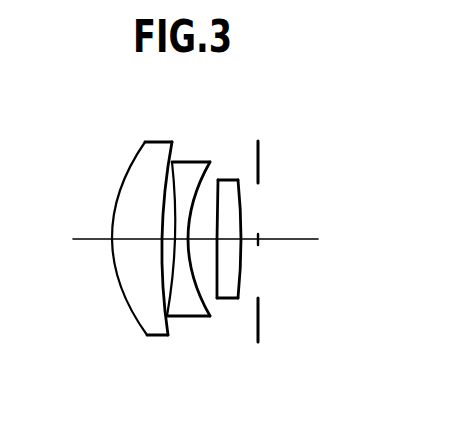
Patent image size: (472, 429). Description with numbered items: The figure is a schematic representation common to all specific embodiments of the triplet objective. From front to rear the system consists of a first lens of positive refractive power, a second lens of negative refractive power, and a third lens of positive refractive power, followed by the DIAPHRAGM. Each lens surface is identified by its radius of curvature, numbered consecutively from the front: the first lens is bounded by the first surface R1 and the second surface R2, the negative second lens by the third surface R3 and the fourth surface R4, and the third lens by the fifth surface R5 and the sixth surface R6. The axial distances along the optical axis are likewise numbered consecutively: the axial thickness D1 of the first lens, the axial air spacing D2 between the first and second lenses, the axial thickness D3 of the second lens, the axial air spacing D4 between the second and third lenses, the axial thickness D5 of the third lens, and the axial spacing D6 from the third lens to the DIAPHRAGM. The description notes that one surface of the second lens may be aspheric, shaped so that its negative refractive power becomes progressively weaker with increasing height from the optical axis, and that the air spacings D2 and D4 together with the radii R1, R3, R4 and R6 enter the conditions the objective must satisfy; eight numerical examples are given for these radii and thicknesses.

The first surface radius of curvature R1 is at (148, 141).
The second surface radius of curvature R2 is at (171, 141).
The third surface radius of curvature R3 is at (175, 161).
The fourth surface radius of curvature R4 is at (208, 161).
The fifth surface radius of curvature R5 is at (219, 179).
The sixth surface radius of curvature R6 is at (240, 179).
The axial thickness of first lens D1 is at (141, 242).
The axial air spacing between first and second lenses D2 is at (164, 243).
The axial thickness of second lens D3 is at (181, 242).
The axial air spacing between second and third lenses D4 is at (200, 242).
The axial thickness of third lens D5 is at (226, 242).
The axial spacing from third lens to diaphragm D6 is at (248, 242).
The diaphragm DIAPHRAGM is at (260, 320).